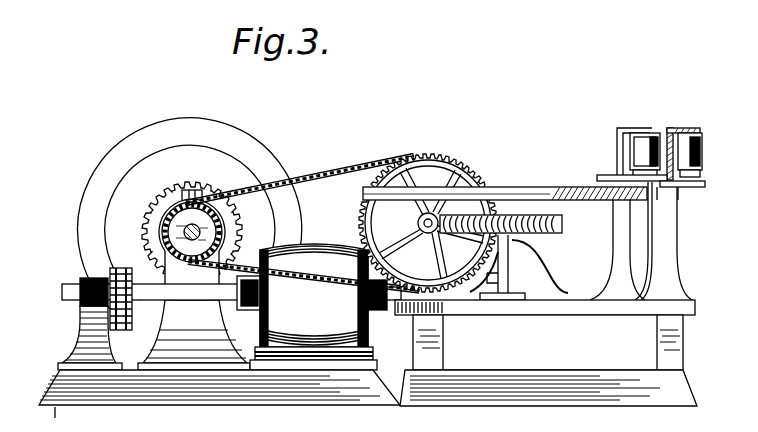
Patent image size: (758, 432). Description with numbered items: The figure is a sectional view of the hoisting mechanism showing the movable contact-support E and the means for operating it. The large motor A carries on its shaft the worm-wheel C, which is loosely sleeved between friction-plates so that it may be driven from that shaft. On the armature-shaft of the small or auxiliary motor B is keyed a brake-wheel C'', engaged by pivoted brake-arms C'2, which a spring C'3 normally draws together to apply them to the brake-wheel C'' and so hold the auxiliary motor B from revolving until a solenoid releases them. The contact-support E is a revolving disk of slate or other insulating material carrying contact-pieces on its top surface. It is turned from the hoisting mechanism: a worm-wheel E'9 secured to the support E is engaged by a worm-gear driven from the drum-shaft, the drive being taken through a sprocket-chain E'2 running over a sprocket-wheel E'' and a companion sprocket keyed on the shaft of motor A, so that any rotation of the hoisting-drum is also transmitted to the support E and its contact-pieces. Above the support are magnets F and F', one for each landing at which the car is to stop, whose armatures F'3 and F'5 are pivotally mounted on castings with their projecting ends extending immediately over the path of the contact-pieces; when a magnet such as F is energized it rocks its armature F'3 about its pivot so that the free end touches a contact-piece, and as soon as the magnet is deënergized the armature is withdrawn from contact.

The large motor A is at (127, 182).
The small or auxiliary motor B is at (313, 307).
The worm-wheel C is at (173, 232).
The brake-wheel C'' is at (201, 213).
The brake-arms C'2 is at (162, 285).
The spring C'3 is at (71, 324).
The movable contact-support E is at (505, 208).
The sprocket-chain E'2 is at (303, 214).
The sprocket-wheel E'' is at (428, 204).
The worm-wheel E'9 is at (509, 242).
The magnet F is at (617, 140).
The magnet F' is at (681, 136).
The armature F'3 is at (643, 166).
The armature F'5 is at (682, 205).